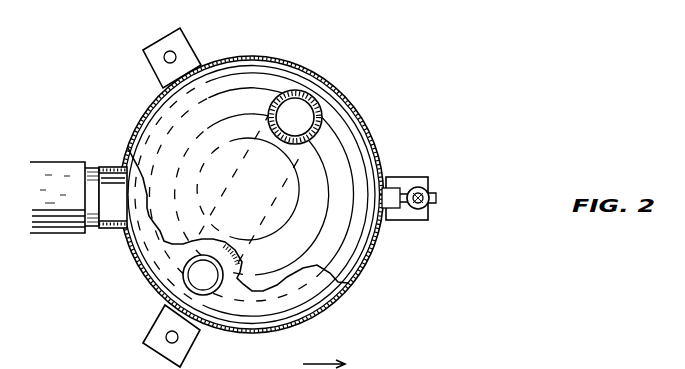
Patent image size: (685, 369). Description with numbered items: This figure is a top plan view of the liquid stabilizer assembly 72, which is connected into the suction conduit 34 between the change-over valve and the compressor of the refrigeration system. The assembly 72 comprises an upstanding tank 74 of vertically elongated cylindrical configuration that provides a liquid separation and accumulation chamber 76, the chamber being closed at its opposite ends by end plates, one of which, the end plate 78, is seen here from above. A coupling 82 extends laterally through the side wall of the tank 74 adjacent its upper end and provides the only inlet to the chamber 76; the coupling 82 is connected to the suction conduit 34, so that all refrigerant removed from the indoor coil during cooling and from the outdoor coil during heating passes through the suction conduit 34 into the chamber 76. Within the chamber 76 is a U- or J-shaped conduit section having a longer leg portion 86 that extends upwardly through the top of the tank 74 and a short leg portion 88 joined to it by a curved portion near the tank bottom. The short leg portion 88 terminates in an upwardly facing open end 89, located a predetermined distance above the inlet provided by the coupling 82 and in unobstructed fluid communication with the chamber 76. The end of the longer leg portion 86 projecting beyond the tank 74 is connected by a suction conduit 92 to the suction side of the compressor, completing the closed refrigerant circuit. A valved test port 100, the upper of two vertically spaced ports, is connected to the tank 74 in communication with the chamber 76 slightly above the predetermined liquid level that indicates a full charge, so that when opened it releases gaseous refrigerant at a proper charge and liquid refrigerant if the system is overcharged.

The suction conduit 34 is at (60, 162).
The liquid stabilizer assembly 72 is at (393, 128).
The tank 74 is at (388, 249).
The liquid separation and accumulation chamber 76 is at (318, 287).
The end plate 78 is at (273, 73).
The coupling 82 is at (105, 167).
The longer leg portion 86 is at (318, 108).
The short leg portion 88 is at (221, 294).
The open end 89 is at (197, 276).
The suction conduit 92 is at (313, 92).
The upper valved test port 100 is at (432, 197).